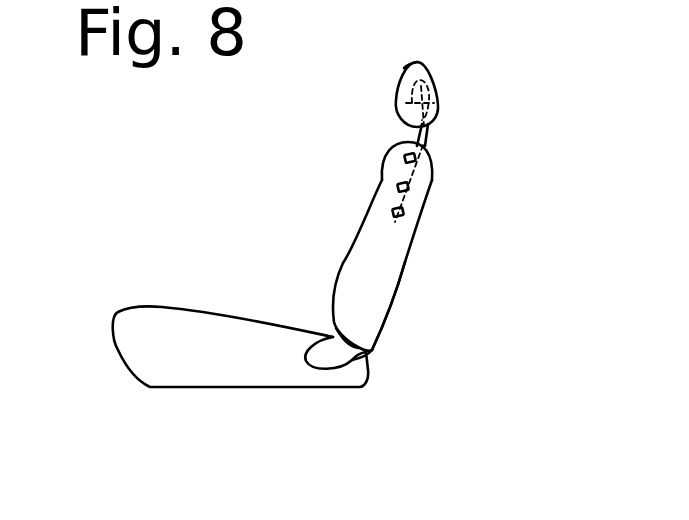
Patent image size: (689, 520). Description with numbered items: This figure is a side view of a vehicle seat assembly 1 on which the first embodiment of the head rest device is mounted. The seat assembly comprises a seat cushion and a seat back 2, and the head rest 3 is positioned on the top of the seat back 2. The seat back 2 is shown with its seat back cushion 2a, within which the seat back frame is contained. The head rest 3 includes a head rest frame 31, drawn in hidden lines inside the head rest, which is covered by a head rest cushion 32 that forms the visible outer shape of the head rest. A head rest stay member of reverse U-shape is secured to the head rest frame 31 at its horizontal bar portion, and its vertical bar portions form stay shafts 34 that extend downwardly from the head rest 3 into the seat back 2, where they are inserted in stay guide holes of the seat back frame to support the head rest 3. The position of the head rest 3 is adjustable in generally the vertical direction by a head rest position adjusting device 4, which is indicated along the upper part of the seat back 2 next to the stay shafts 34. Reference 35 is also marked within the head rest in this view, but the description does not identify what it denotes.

The vehicle seat assembly 1 is at (214, 275).
The seat back 2 is at (357, 218).
The seat back cushion 2a is at (398, 298).
The head rest 3 is at (393, 78).
The head rest position adjusting device 4 is at (424, 180).
The head rest frame 31 is at (410, 101).
The head rest cushion 32 is at (423, 61).
The stay shafts 34 is at (429, 129).
The headrest inner element 35 is at (430, 103).